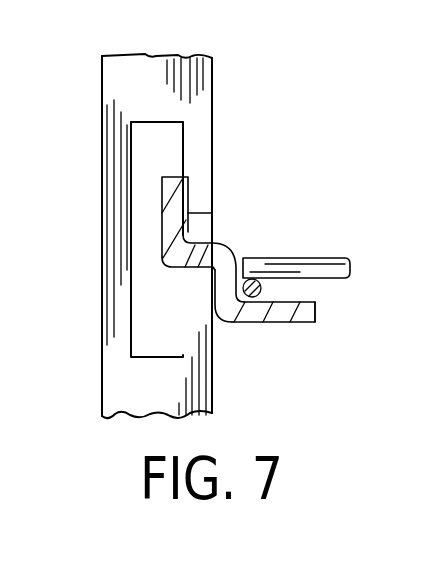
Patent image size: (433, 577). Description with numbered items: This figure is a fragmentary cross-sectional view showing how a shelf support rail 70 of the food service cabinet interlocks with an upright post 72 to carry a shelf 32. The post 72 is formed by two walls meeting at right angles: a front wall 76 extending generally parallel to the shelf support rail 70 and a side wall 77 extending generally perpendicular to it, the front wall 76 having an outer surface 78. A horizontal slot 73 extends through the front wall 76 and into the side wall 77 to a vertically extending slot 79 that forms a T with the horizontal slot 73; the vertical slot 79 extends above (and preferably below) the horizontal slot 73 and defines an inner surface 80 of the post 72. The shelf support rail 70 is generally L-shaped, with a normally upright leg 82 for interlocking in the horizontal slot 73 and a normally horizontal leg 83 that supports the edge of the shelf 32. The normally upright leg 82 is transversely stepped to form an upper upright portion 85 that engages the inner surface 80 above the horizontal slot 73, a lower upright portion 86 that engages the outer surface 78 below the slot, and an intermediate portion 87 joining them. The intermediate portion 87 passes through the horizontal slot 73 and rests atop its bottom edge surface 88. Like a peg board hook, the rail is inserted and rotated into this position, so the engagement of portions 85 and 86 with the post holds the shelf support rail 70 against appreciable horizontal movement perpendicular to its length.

The upright post 72 is at (157, 220).
The side wall 77 is at (102, 87).
The outer surface 78 is at (268, 137).
The front wall 76 is at (213, 383).
The vertical slot 79 is at (143, 155).
The inner surface 80 is at (183, 150).
The upper upright portion 85 is at (160, 190).
The normally upright leg 82 is at (162, 237).
The intermediate portion 87 is at (178, 264).
The horizontal slot 73 is at (200, 222).
The bottom edge surface 88 is at (208, 240).
The lower upright portion 86 is at (215, 282).
The normally horizontal leg 83 is at (286, 323).
The shelf support rail 70 is at (328, 312).
The shelf 32 is at (317, 257).